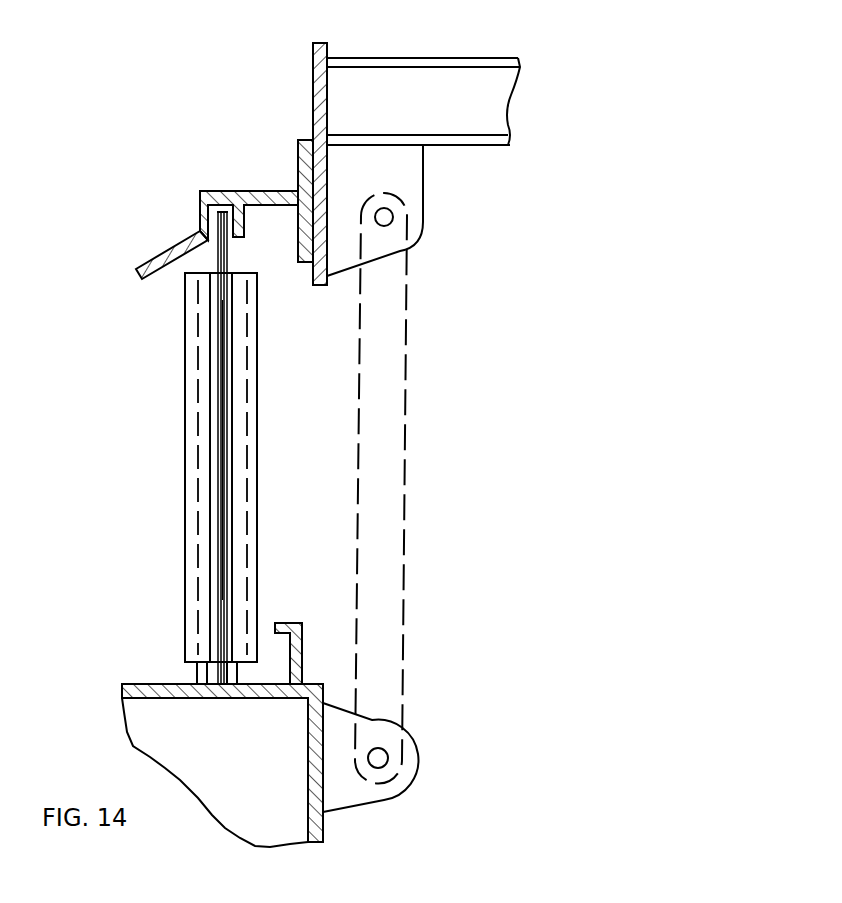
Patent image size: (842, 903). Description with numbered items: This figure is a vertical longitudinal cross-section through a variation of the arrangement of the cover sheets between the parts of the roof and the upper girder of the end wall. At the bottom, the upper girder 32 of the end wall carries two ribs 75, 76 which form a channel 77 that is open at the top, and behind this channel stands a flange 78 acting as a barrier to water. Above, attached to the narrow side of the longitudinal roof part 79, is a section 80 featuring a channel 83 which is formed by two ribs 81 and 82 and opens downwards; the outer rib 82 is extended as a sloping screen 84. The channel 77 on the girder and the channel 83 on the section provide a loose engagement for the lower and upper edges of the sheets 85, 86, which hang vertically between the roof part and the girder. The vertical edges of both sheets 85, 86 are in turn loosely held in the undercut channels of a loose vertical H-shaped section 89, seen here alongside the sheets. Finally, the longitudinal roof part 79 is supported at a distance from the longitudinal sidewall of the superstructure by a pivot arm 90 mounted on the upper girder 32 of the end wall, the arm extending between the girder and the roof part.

The upper girder 32 is at (150, 725).
The rib 75 is at (237, 670).
The rib 76 is at (197, 677).
The channel 77 is at (212, 690).
The flange 78 is at (303, 653).
The longitudinal roof part 79 is at (410, 90).
The section 80 is at (235, 198).
The rib 81 is at (237, 209).
The outer rib 82 is at (201, 216).
The channel 83 is at (215, 217).
The sloping screen 84 is at (155, 260).
The sheet 85 is at (220, 422).
The sheet 86 is at (137, 450).
The vertical H-shaped section 89 is at (185, 540).
The pivot arm 90 is at (382, 399).